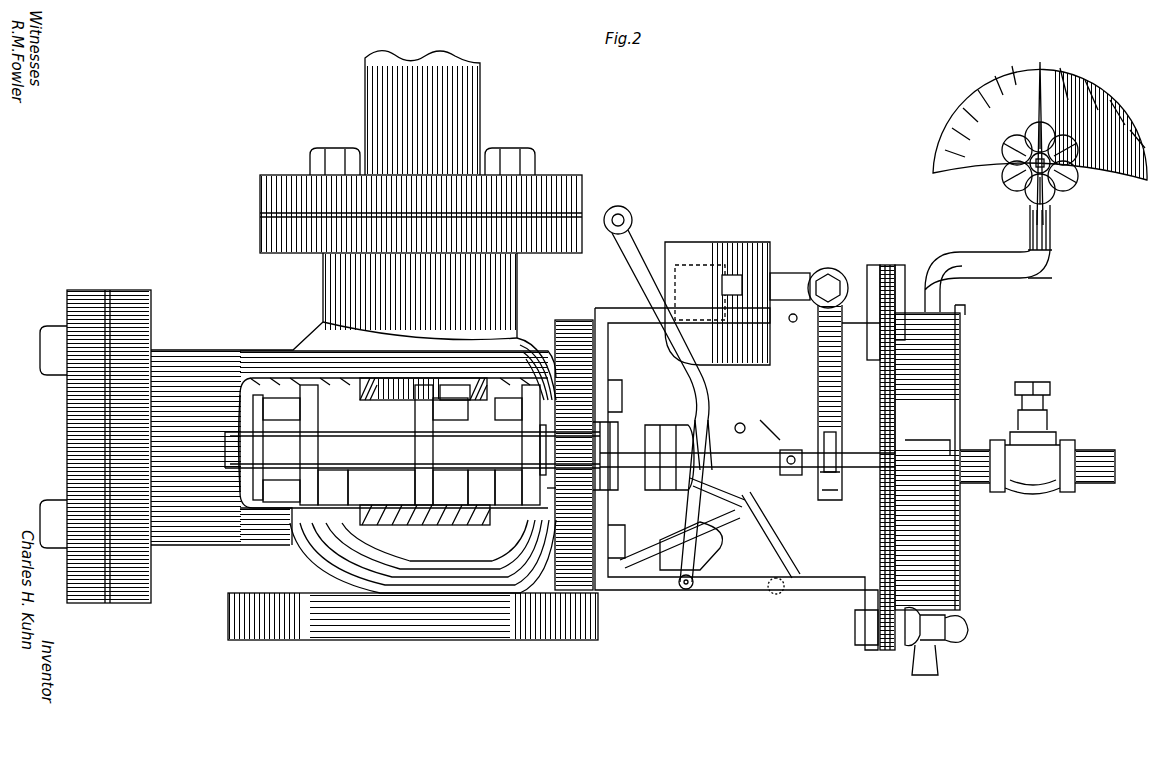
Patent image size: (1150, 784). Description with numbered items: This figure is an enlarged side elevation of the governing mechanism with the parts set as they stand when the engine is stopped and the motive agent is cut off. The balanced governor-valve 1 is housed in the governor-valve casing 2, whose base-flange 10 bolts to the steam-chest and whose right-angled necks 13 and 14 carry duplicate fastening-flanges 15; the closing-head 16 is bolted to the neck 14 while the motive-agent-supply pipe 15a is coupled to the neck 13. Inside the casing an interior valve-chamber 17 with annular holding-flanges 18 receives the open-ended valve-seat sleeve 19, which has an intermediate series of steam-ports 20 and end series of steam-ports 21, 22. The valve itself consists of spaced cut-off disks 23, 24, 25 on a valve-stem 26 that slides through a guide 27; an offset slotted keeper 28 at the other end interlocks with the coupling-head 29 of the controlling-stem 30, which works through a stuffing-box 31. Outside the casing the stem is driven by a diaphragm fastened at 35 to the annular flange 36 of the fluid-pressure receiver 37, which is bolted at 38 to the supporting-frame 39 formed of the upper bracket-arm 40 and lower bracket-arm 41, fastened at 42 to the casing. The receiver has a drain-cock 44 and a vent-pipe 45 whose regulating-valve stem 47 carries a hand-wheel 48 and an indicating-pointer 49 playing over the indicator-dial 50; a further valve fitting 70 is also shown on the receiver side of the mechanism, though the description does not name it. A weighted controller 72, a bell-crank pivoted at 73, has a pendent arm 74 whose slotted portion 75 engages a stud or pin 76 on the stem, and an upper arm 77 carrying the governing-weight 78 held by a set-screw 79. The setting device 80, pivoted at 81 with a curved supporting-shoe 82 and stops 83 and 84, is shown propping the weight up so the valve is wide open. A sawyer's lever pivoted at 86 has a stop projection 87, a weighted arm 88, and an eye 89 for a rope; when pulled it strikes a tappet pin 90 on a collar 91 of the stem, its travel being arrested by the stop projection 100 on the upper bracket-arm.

The balanced governor-valve 1 is at (422, 525).
The governor-valve casing 2 is at (295, 342).
The base-flange 10 is at (292, 600).
The neck 13 is at (455, 392).
The neck 14 is at (250, 447).
The fastening-flange 15 is at (262, 236).
The motive-agent-supply pipe 15a is at (482, 100).
The closing-head 16 is at (66, 428).
The interior valve-chamber 17 is at (558, 340).
The annular holding-flanges 18 is at (402, 378).
The valve-seat sleeve 19 is at (352, 502).
The intermediate steam-ports 20 is at (450, 451).
The end steam-ports 21 is at (305, 451).
The end steam-ports 22 is at (508, 451).
The cut-off disk 23 is at (300, 440).
The cut-off disk 24 is at (415, 440).
The cut-off disk 25 is at (522, 440).
The valve-stem 26 is at (480, 485).
The guide 27 is at (240, 432).
The offset slotted keeper 28 is at (556, 488).
The coupling-head 29 is at (547, 452).
The controlling-stem 30 is at (866, 468).
The stuffing-box 31 is at (605, 456).
The diaphragm fastening 35 is at (886, 265).
The annular flange 36 is at (900, 265).
The fluid-pressure receiver 37 is at (930, 457).
The receiver fastening 38 is at (872, 265).
The supporting-frame 39 is at (722, 582).
The upper bracket-arm 40 is at (864, 325).
The lower bracket-arm 41 is at (736, 479).
The frame fastening 42 is at (614, 370).
The drain-cock 44 is at (911, 641).
The vent-pipe 45 is at (990, 252).
The valve stem 47 is at (1015, 180).
The hand-wheel 48 is at (1035, 190).
The indicating-pointer 49 is at (1037, 108).
The indicator-dial 50 is at (1062, 68).
The valve 70 is at (1037, 438).
The weighted controller 72 is at (826, 282).
The bell-crank pivot 73 is at (828, 288).
The pendent arm 74 is at (842, 398).
The slotted portion 75 is at (795, 450).
The stud or pin 76 is at (826, 492).
The upper arm 77 is at (790, 277).
The governing-weight 78 is at (717, 294).
The set-screw 79 is at (732, 285).
The setting device 80 is at (669, 457).
The setting-arm pivot 81 is at (686, 592).
The curved supporting-shoe 82 is at (699, 421).
The stop 83 is at (705, 552).
The stop 84 is at (668, 583).
The sawyer's lever pivot 86 is at (740, 428).
The stop projection 87 is at (756, 590).
The weighted arm 88 is at (717, 492).
The eye 89 is at (632, 214).
The tappet pin 90 is at (792, 465).
The collar 91 is at (780, 440).
The stop projection 100 is at (793, 323).